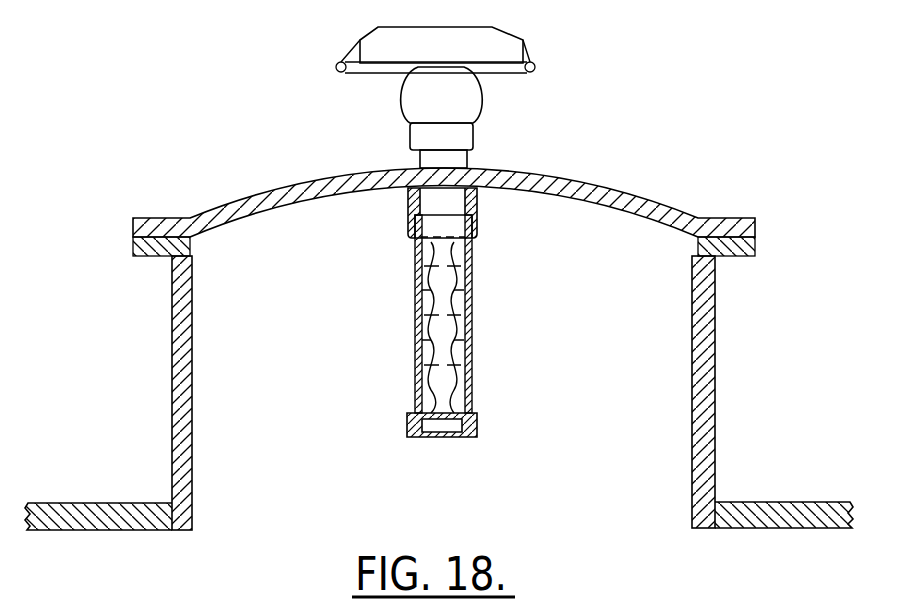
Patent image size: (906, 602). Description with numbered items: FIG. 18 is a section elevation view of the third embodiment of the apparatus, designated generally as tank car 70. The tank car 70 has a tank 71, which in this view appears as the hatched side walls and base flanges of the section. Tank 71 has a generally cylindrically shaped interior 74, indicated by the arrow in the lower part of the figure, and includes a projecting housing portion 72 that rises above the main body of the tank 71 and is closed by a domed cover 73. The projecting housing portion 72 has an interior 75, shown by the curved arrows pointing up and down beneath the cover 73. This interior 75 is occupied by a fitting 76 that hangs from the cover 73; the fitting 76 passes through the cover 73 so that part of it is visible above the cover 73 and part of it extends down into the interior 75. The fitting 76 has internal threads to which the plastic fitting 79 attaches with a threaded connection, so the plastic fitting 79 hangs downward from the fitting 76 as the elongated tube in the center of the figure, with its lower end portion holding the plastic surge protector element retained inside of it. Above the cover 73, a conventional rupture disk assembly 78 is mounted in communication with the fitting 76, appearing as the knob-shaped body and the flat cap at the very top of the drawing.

The tank car 70 is at (657, 91).
The tank 71 is at (96, 526).
The projecting housing portion 72 is at (172, 345).
The cover 73 is at (270, 191).
The tank interior 74 is at (254, 542).
The housing interior 75 is at (322, 312).
The fitting 76 is at (467, 163).
The rupture disk assembly 78 is at (483, 100).
The plastic fitting 79 is at (472, 368).